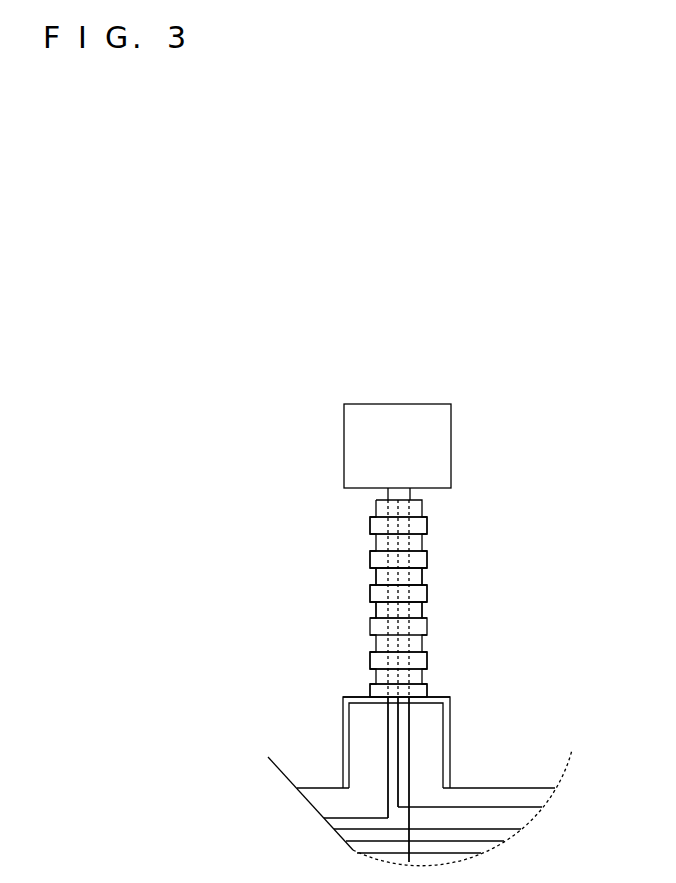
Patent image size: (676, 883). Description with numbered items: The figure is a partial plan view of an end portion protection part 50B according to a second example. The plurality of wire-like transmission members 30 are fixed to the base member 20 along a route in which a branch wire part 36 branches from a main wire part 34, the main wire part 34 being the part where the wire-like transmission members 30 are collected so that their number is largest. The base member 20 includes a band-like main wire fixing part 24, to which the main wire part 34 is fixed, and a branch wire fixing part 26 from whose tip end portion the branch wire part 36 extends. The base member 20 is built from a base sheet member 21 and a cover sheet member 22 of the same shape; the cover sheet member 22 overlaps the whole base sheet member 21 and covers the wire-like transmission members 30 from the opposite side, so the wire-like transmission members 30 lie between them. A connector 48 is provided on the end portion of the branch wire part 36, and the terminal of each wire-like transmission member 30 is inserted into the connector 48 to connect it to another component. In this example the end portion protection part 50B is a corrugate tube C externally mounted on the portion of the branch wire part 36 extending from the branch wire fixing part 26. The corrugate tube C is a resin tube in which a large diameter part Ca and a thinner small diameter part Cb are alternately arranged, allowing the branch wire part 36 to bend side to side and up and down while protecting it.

The connector 48 is at (451, 445).
The branch wire part 36 is at (428, 525).
The corrugate tube C is at (441, 630).
The large diameter part Ca is at (427, 593).
The small diameter part Cb is at (374, 612).
The end portion protection part 50B is at (441, 667).
The branch wire fixing part 26 is at (452, 722).
The base member 20 is at (346, 714).
The base sheet member 21 is at (345, 712).
The cover sheet member 22 is at (363, 695).
The wire-like transmission member 30 is at (352, 825).
The main wire fixing part 24 is at (420, 789).
The main wire part 34 is at (485, 807).